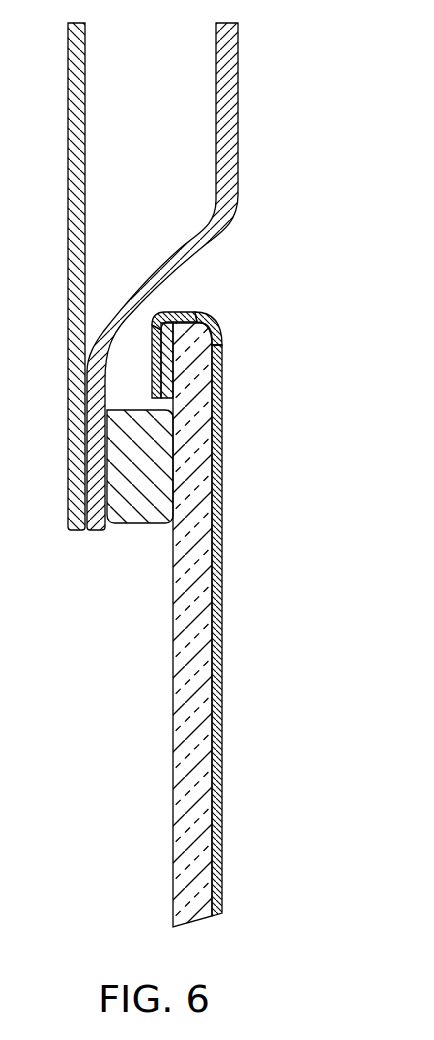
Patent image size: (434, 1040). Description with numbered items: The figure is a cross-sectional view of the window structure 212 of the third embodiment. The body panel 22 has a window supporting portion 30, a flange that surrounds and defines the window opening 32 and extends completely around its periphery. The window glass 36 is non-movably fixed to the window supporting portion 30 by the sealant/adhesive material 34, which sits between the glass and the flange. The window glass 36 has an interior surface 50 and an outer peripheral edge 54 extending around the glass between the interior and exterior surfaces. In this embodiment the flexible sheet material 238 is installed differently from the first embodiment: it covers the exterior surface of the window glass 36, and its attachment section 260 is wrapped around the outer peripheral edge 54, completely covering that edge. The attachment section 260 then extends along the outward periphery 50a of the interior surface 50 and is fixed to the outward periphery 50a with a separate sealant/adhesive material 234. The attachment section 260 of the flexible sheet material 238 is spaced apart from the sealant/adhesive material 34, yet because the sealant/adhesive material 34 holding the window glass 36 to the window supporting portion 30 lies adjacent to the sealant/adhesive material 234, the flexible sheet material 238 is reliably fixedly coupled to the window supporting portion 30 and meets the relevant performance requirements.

The body panel 22 is at (216, 133).
The window supporting portion 30 is at (97, 477).
The window opening 32 is at (92, 532).
The sealant/adhesive material 34 is at (132, 492).
The window glass 36 is at (190, 661).
The interior surface 50 is at (115, 625).
The outward periphery of the interior surface 50a is at (160, 381).
The outer peripheral edge 54 is at (197, 313).
The window structure 212 is at (268, 247).
The sealant/adhesive material 234 is at (226, 594).
The flexible sheet material 238 is at (222, 745).
The attachment section 260 is at (155, 313).